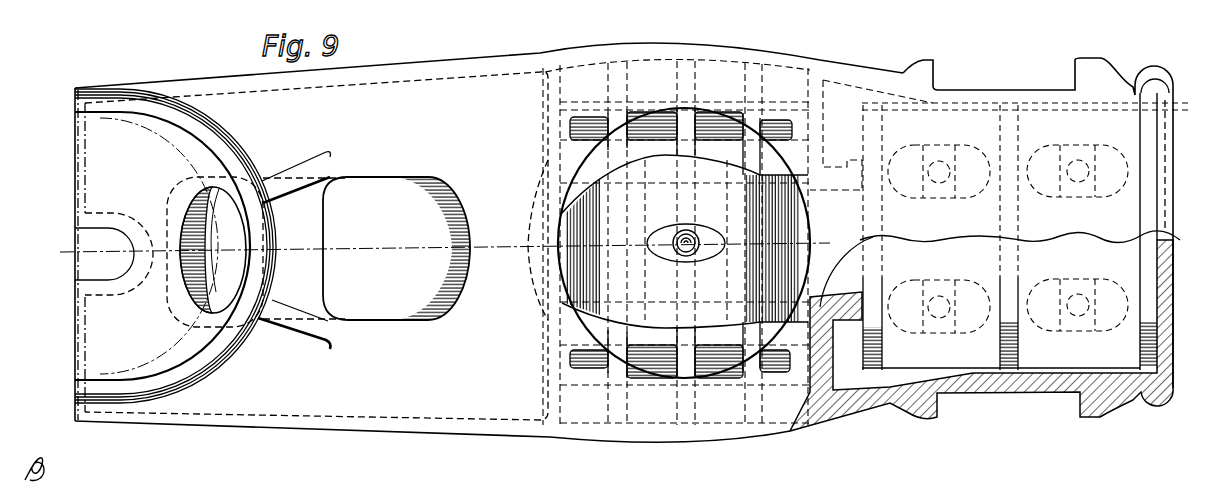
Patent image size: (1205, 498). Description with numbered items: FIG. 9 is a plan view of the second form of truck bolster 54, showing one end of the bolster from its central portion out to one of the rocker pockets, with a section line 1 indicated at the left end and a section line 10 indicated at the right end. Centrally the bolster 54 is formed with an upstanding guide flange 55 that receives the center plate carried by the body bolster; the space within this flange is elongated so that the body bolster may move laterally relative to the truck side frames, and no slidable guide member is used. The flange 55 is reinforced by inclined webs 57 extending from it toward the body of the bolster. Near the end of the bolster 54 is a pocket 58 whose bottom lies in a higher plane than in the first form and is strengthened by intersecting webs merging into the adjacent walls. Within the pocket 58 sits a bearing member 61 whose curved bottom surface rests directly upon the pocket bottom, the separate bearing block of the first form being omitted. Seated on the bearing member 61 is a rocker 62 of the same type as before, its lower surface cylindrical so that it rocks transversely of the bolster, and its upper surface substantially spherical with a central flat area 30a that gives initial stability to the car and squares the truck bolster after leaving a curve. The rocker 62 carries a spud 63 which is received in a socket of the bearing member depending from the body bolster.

The section line 1 is at (68, 283).
The section line 10 is at (1077, 103).
The central flat area 30a is at (677, 235).
The bolster 54 is at (396, 276).
The upstanding guide flange 55 is at (227, 151).
The inclined webs 57 is at (292, 172).
The pocket 58 is at (575, 163).
The bearing member 61 is at (557, 187).
The rocker 62 is at (685, 241).
The spud 63 is at (693, 230).